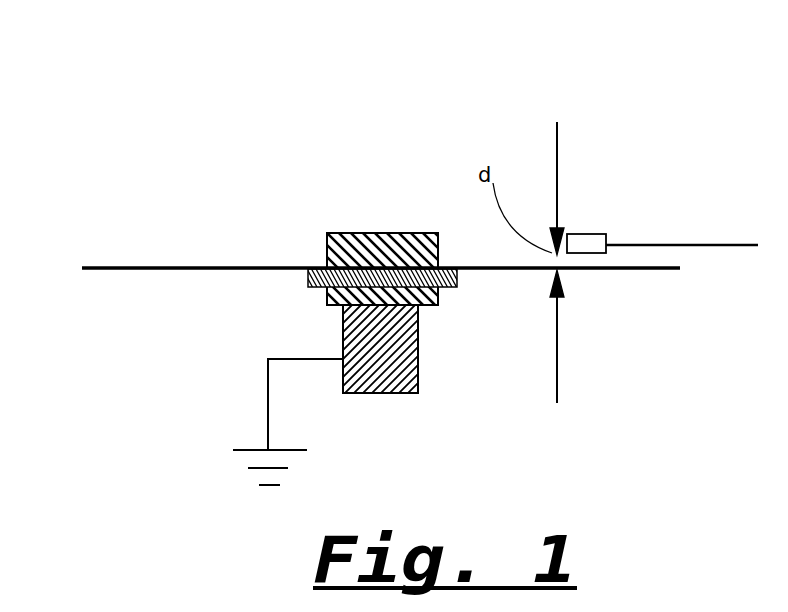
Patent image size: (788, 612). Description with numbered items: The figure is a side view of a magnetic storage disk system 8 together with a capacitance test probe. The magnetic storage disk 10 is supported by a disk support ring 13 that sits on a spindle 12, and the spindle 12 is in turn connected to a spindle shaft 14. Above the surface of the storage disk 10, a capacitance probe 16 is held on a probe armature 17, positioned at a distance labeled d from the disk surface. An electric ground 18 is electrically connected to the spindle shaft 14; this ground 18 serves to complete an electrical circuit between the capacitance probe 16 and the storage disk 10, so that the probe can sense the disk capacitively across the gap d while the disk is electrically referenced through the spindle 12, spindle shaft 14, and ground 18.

The magnetic storage disk system 8 is at (138, 84).
The magnetic storage disk 10 is at (106, 260).
The spindle 12 is at (409, 240).
The disk support ring 13 is at (312, 272).
The spindle shaft 14 is at (402, 347).
The capacitance probe 16 is at (583, 234).
The probe armature 17 is at (697, 245).
The electric ground 18 is at (240, 452).